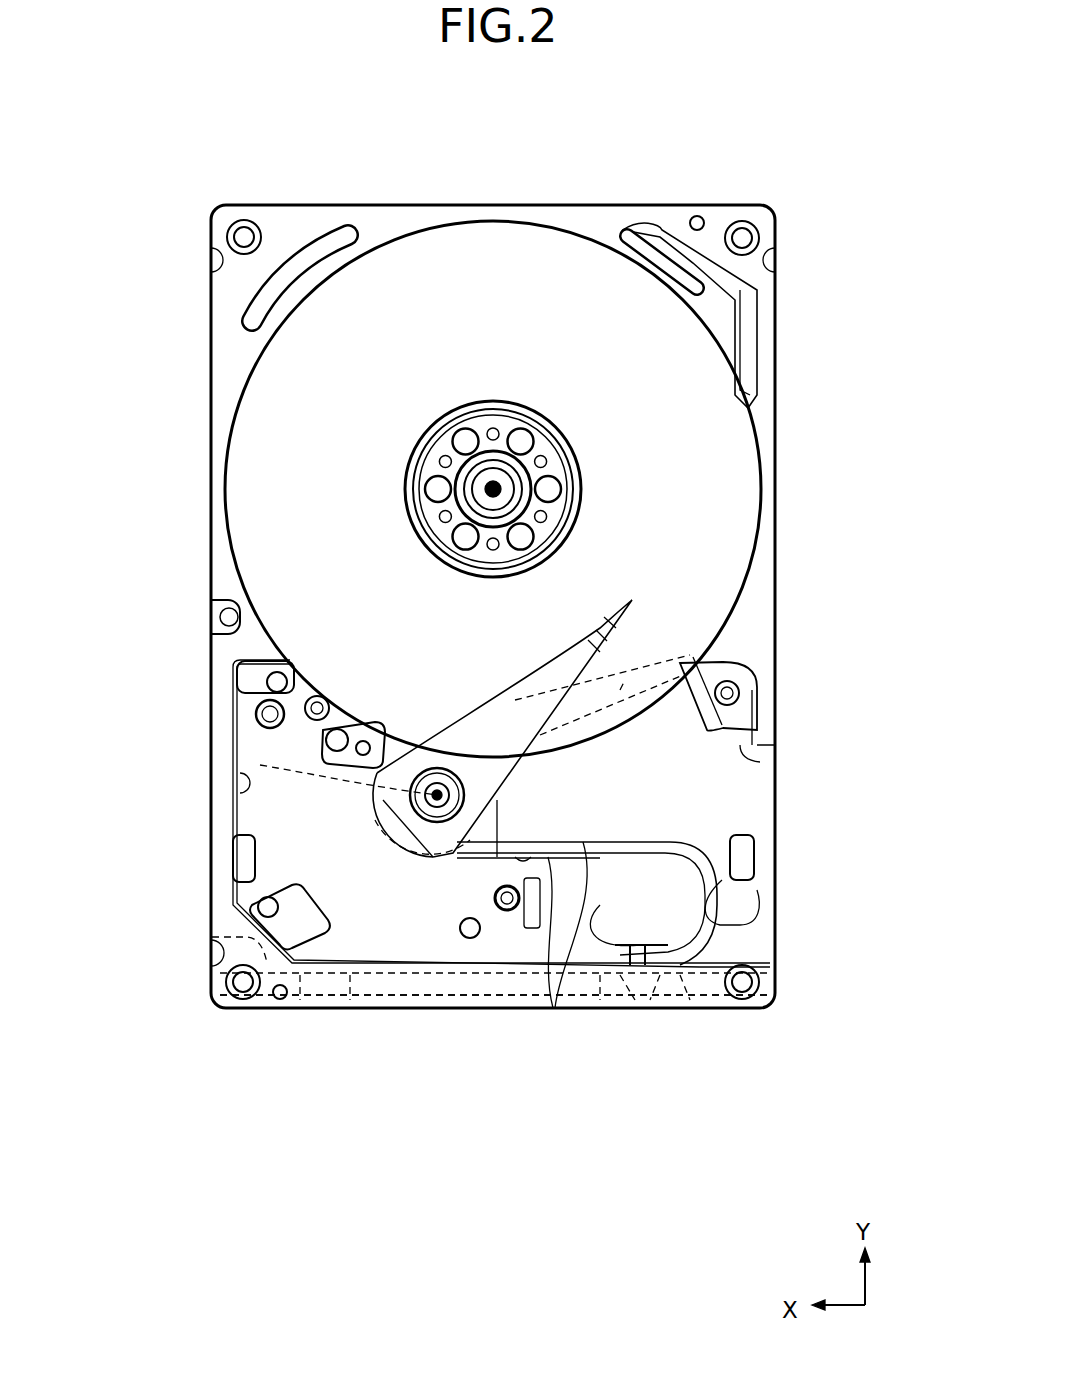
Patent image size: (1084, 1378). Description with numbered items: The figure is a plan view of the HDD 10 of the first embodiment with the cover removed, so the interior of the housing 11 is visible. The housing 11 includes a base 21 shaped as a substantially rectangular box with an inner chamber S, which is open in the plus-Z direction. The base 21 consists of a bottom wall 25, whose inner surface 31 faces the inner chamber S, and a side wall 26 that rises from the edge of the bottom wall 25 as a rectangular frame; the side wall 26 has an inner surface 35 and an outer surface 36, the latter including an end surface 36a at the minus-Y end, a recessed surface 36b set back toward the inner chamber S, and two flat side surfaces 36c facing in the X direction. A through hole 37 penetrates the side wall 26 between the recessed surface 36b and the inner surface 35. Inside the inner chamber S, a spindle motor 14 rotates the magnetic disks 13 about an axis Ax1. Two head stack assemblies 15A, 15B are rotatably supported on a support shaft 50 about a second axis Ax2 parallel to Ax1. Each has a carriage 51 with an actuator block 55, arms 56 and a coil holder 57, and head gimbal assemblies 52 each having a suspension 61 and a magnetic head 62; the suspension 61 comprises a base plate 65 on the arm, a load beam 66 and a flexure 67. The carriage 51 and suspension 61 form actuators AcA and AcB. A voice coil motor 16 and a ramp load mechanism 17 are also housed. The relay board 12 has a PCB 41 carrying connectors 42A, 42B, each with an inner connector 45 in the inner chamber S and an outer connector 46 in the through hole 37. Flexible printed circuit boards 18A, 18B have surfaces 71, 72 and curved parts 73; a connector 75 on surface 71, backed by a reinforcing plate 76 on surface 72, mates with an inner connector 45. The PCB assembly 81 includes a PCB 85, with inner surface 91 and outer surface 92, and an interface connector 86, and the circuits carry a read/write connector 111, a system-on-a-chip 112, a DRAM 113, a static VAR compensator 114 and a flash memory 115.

The HDD 10 is at (178, 78).
The housing 11 is at (503, 627).
The relay board 12 is at (597, 990).
The magnetic disk 13 is at (544, 439).
The spindle motor 14 is at (516, 356).
The head stack assembly 15A is at (505, 818).
The head stack assembly 15B is at (505, 818).
The voice coil motor 16 is at (320, 815).
The ramp load mechanism 17 is at (810, 702).
The flexible printed circuit board 18A is at (597, 990).
The flexible printed circuit board 18B is at (597, 990).
The base 21 is at (300, 215).
The bottom wall 25 is at (810, 702).
The side wall 26 is at (287, 230).
The inner surface 31 is at (810, 702).
The inner surface 35 is at (740, 440).
The outer surface 36 is at (503, 627).
The end surface 36a is at (503, 627).
The recessed surface 36b is at (503, 627).
The side surface 36c is at (742, 198).
The through hole 37 is at (597, 990).
The printed circuit board 41 is at (597, 990).
The connector 42A is at (597, 990).
The connector 42B is at (597, 990).
The inner connector 45 is at (597, 990).
The outer connector 46 is at (597, 990).
The support shaft 50 is at (505, 818).
The carriage 51 is at (505, 818).
The head gimbal assembly 52 is at (505, 818).
The actuator block 55 is at (505, 818).
The arm 56 is at (505, 818).
The coil holder 57 is at (505, 818).
The suspension 61 is at (505, 818).
The magnetic head 62 is at (505, 818).
The base plate 65 is at (505, 818).
The load beam 66 is at (505, 818).
The flexure 67 is at (505, 818).
The surface 71 is at (597, 990).
The surface 72 is at (597, 990).
The curved part 73 is at (597, 990).
The connector 75 is at (597, 990).
The reinforcing plate 76 is at (597, 990).
The PCB assembly 81 is at (597, 990).
The PCB 85 is at (765, 1029).
The interface connector 86 is at (212, 937).
The inner surface 91 is at (775, 990).
The outer surface 92 is at (760, 1008).
The read/write connector 111 is at (597, 990).
The system-on-a-chip 112 is at (597, 990).
The DRAM 113 is at (597, 990).
The static VAR compensator 114 is at (760, 820).
The flash memory 115 is at (597, 990).
The axis Ax1 is at (500, 420).
The axis Ax2 is at (505, 818).
The actuator AcA is at (505, 818).
The actuator AcB is at (540, 775).
The inner chamber S is at (750, 665).